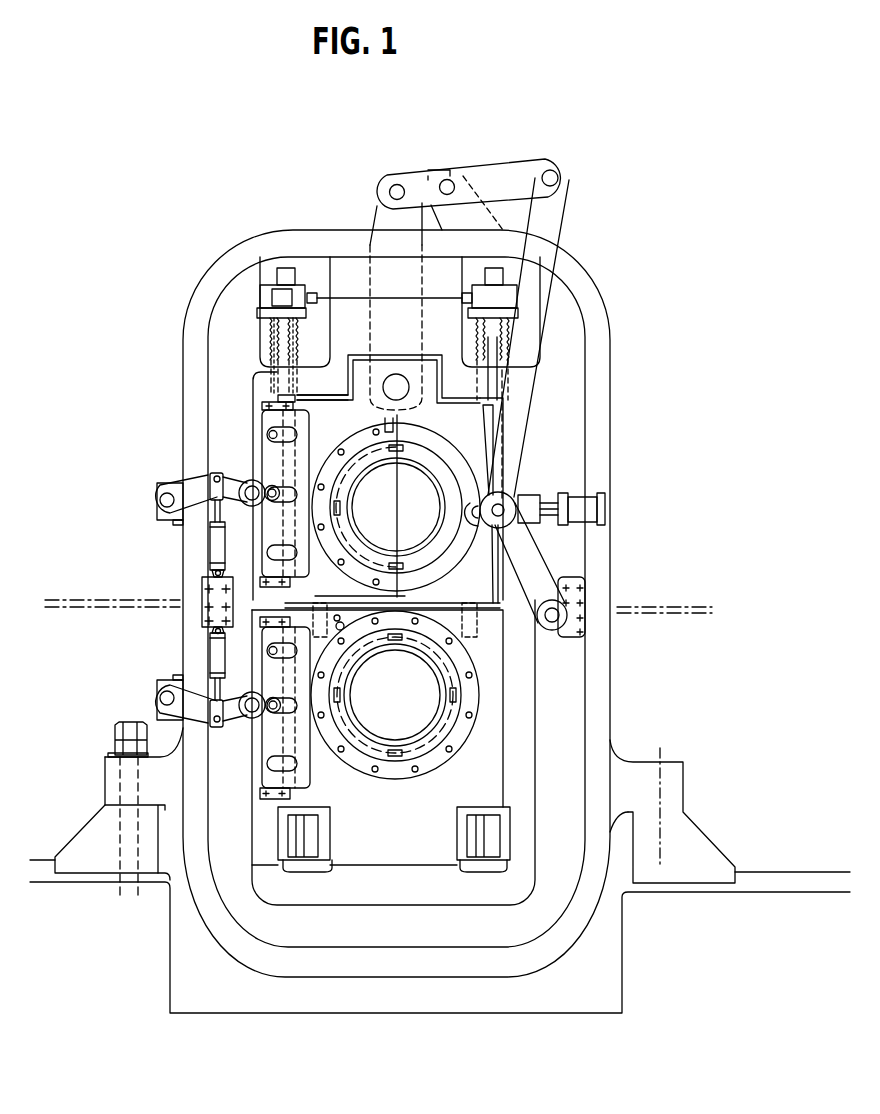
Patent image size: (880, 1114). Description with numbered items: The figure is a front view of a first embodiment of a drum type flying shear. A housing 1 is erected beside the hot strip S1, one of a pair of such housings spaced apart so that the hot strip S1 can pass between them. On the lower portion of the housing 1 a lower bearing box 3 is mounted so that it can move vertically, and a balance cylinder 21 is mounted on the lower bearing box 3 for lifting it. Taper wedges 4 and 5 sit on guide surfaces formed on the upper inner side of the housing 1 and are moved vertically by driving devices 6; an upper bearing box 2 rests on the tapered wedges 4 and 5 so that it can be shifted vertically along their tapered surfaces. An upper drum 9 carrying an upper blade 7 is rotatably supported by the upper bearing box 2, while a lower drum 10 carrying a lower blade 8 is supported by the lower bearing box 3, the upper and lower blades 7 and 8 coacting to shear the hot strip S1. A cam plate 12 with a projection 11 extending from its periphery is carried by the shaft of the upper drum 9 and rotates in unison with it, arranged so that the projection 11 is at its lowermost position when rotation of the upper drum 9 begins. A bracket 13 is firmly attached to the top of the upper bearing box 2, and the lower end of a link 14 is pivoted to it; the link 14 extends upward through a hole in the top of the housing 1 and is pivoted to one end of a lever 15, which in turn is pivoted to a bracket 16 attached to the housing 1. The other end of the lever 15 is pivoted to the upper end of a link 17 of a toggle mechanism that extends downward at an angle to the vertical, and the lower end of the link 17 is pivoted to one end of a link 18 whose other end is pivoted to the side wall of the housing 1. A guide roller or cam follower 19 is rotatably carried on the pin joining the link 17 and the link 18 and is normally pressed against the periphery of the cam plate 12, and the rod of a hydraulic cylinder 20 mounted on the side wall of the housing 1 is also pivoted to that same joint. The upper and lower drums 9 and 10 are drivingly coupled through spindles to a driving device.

The housing 1 is at (185, 357).
The upper bearing box 2 is at (322, 420).
The lower bearing box 3 is at (365, 852).
The taper wedge 4 is at (287, 458).
The taper wedge 5 is at (492, 418).
The driving device 6 is at (280, 280).
The upper blade 7 is at (438, 598).
The lower blade 8 is at (365, 603).
The upper drum 9 is at (428, 492).
The lower drum 10 is at (420, 705).
The projection 11 is at (468, 538).
The cam plate 12 is at (503, 530).
The bracket 13 is at (358, 372).
The link 14 is at (377, 208).
The lever 15 is at (492, 180).
The bracket 16 is at (478, 223).
The link 17 is at (548, 233).
The link 18 is at (535, 570).
The guide roller 19 is at (517, 497).
The hydraulic cylinder 20 is at (588, 507).
The balance cylinder 21 is at (283, 600).
The hot strip S1 is at (85, 600).